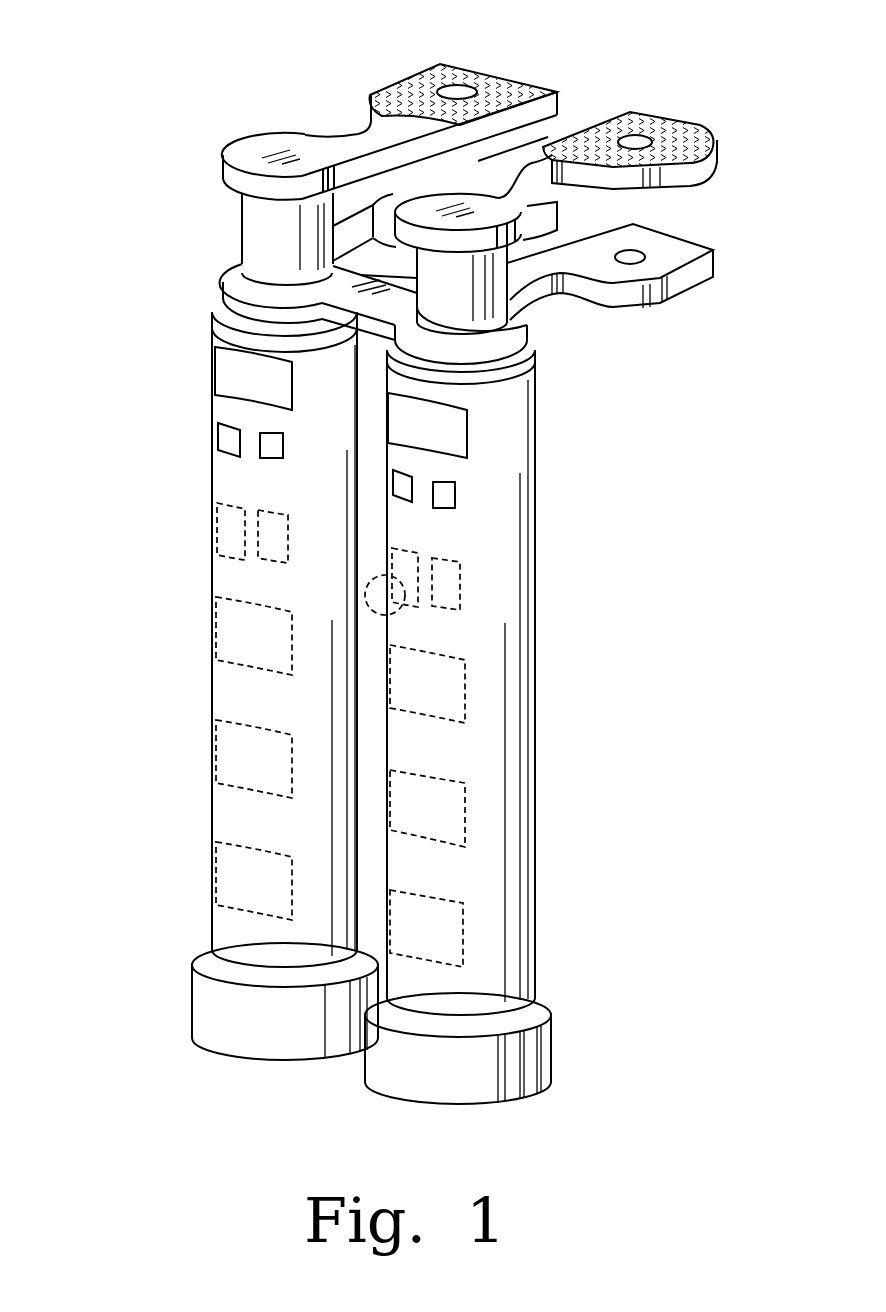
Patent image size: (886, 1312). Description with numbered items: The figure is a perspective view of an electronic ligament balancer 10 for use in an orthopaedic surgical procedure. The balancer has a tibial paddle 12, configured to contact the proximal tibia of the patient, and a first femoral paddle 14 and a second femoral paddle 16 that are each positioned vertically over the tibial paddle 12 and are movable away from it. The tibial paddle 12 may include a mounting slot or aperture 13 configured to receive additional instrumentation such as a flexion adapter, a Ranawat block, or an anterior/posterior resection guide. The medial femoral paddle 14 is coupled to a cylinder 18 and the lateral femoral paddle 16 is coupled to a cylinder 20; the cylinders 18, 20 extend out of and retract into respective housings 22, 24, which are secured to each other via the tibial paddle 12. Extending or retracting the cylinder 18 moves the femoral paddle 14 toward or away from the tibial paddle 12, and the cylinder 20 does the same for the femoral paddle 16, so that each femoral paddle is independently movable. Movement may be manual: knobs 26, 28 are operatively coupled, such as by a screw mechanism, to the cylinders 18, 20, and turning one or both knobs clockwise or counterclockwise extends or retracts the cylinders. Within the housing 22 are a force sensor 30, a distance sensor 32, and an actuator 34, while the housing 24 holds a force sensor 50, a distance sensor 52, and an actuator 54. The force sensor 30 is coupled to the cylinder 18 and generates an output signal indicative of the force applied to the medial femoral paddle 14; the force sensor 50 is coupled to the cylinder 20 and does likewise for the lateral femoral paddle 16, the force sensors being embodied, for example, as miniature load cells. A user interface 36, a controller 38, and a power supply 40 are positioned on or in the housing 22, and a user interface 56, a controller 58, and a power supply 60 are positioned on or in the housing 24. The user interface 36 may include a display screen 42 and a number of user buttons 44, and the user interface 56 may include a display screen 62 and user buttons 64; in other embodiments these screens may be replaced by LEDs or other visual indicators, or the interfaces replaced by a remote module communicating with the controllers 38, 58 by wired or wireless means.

The ligament balancer 10 is at (118, 86).
The tibial paddle 12 is at (222, 280).
The mounting slot or aperture 13 is at (565, 118).
The first femoral paddle 14 is at (500, 77).
The second femoral paddle 16 is at (700, 137).
The cylinder 18 is at (248, 236).
The cylinder 20 is at (490, 283).
The housing 22 is at (212, 826).
The housing 24 is at (537, 893).
The knob 26 is at (243, 1060).
The knob 28 is at (465, 1108).
The force sensor 30 is at (217, 522).
The distance sensor 32 is at (290, 540).
The actuator 34 is at (216, 628).
The user interface 36 is at (184, 410).
The controller 38 is at (216, 750).
The power supply 40 is at (216, 872).
The display screen 42 is at (215, 373).
The user buttons 44 is at (263, 458).
The force sensor 50 is at (462, 588).
The distance sensor 52 is at (398, 612).
The actuator 54 is at (465, 690).
The user interface 56 is at (552, 478).
The controller 58 is at (465, 815).
The power supply 60 is at (463, 935).
The display screen 62 is at (470, 425).
The user buttons 64 is at (400, 502).